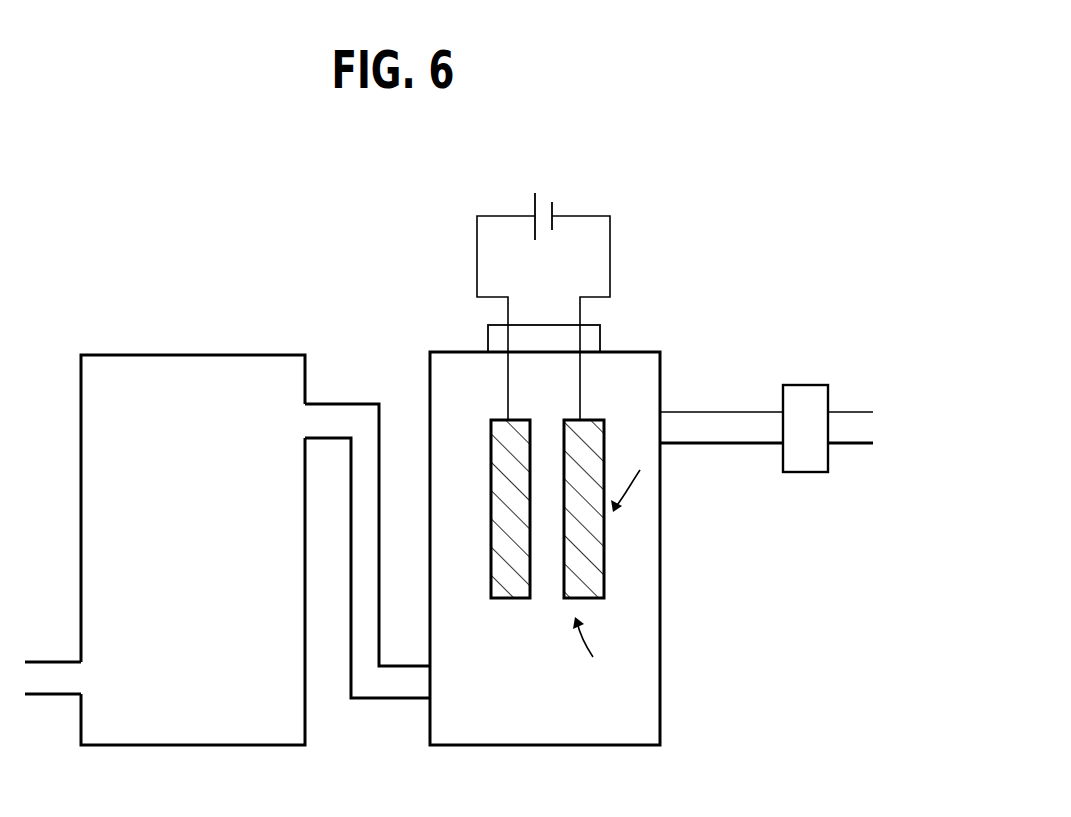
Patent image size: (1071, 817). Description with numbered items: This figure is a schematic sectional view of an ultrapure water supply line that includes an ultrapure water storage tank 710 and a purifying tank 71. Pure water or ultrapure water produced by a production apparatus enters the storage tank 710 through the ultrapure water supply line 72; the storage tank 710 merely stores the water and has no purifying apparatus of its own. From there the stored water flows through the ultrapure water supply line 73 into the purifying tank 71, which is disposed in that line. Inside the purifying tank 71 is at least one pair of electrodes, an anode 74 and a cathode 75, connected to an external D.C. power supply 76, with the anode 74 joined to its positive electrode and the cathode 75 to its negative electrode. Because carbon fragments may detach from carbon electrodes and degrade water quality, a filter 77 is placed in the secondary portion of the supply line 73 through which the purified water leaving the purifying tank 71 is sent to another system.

The purifying tank 71 is at (580, 747).
The ultrapure water supply line 72 is at (46, 696).
The ultrapure water supply line 73 is at (351, 399).
The anode 74 is at (510, 600).
The cathode 75 is at (607, 573).
The D.C. power supply 76 is at (543, 207).
The filter 77 is at (803, 478).
The ultrapure water storage tank 710 is at (206, 728).